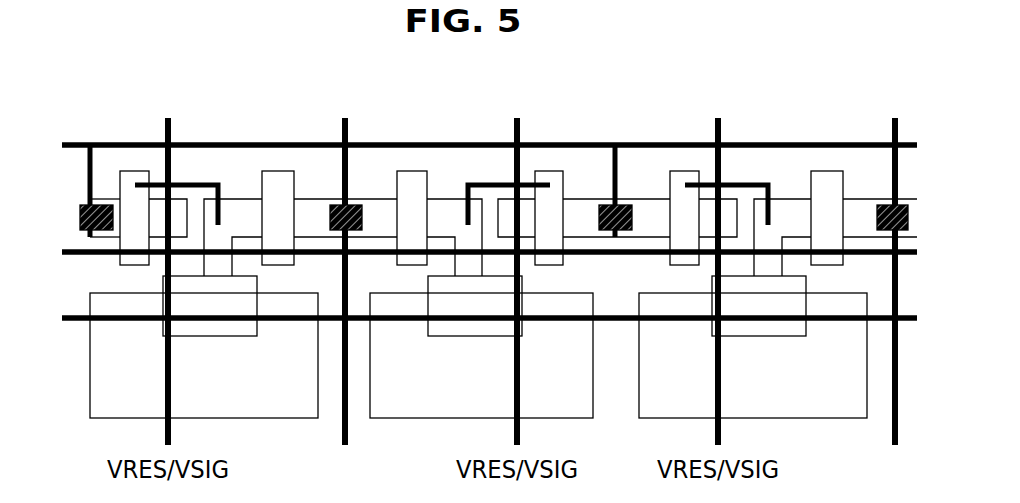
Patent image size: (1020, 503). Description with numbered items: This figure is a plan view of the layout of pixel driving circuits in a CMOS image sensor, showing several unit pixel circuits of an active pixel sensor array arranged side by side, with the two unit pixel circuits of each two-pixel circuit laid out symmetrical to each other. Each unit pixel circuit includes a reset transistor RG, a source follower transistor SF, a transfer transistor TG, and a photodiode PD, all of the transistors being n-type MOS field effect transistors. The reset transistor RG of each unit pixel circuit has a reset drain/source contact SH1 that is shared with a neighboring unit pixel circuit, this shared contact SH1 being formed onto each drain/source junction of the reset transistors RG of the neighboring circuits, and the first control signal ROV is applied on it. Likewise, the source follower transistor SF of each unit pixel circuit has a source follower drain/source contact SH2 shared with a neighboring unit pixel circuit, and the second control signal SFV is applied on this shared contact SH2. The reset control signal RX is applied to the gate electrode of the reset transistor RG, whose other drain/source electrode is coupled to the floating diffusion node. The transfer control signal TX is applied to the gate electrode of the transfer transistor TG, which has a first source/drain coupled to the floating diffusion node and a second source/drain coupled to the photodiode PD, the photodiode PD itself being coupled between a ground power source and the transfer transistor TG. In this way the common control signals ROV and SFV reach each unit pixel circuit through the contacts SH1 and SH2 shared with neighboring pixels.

The shared reset drain/source contact SH1 is at (362, 204).
The shared source follower drain/source contact SH2 is at (633, 205).
The source follower transistor SF is at (409, 218).
The reset transistor RG is at (552, 218).
The transfer transistor TG is at (484, 306).
The photodiode PD is at (478, 355).
The second control signal SFV is at (464, 145).
The reset control signal RX is at (471, 250).
The transfer control signal TX is at (471, 317).
The first control signal ROV is at (621, 301).